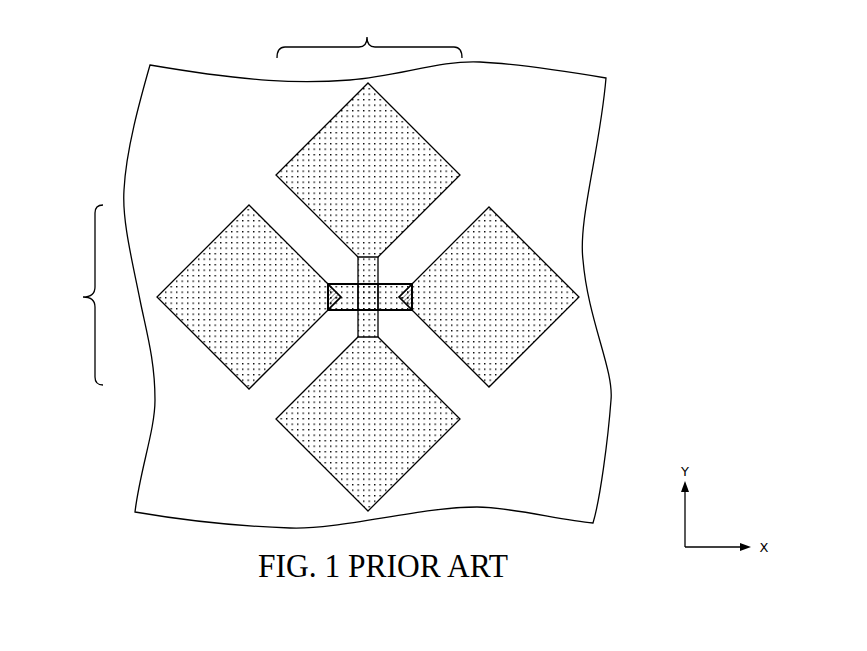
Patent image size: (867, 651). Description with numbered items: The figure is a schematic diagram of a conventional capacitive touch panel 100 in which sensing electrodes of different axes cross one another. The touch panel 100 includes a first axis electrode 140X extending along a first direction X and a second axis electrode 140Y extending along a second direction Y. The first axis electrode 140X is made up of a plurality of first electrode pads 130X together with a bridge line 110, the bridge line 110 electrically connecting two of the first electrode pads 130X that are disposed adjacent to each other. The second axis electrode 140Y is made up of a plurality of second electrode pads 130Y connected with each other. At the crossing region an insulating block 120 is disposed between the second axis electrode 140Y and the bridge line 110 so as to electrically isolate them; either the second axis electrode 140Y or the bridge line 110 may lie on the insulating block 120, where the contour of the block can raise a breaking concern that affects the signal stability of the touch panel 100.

The touch panel 100 is at (645, 67).
The bridge line 110 is at (420, 303).
The insulating block 120 is at (408, 283).
The first electrode pads 130X is at (213, 249).
The second electrode pads 130Y is at (413, 137).
The first axis electrode 140X is at (70, 295).
The second axis electrode 140Y is at (369, 35).